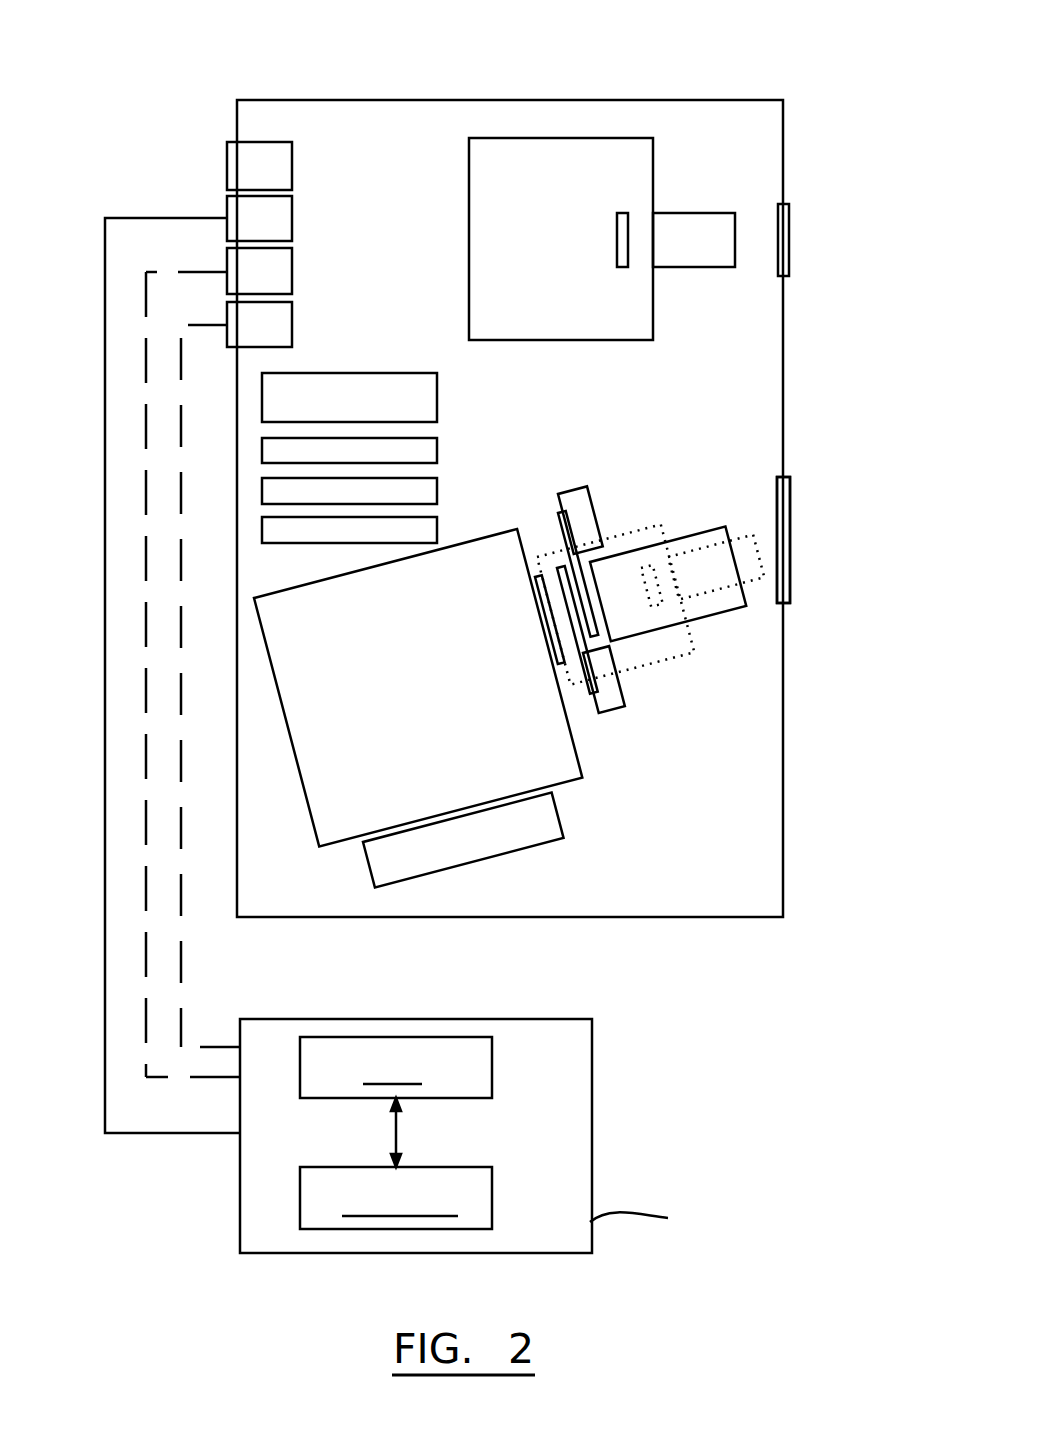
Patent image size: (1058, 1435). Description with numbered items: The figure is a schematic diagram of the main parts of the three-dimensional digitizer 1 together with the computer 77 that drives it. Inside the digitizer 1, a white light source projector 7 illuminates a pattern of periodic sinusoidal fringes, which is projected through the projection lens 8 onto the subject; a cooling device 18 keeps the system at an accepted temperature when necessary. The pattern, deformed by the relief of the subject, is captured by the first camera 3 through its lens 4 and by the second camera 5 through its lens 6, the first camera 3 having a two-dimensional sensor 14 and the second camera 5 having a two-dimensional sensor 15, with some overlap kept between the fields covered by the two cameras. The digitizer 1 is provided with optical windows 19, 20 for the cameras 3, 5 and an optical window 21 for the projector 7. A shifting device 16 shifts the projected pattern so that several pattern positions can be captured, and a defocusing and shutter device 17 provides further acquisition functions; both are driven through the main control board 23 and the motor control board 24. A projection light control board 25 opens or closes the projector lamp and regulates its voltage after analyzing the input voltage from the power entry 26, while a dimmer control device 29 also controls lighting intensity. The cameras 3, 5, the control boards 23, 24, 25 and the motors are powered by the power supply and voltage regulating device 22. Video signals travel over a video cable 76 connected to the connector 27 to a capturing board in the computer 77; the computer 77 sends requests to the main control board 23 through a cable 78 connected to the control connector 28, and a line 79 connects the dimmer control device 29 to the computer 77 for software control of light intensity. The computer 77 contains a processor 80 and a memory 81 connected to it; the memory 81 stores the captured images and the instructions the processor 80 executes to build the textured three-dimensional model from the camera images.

The digitizer 1 is at (380, 100).
The first camera 3 is at (522, 148).
The lens 4 is at (728, 215).
The second camera 5 is at (662, 527).
The lens 6 is at (753, 541).
The white light source projector 7 is at (335, 825).
The projection lens 8 is at (697, 609).
The 2D sensor 14 is at (622, 222).
The 2D sensor 15 is at (662, 609).
The shifting device 16 is at (603, 707).
The defocusing and shutter device 17 is at (583, 497).
The cooling device 18 is at (545, 837).
The optical window 19 is at (792, 208).
The optical window 20 is at (792, 543).
The optical window 21 is at (783, 540).
The power supply and voltage regulating device 22 is at (347, 382).
The main control board 23 is at (432, 447).
The motor control board 24 is at (432, 487).
The projection light control board 25 is at (430, 532).
The power entry 26 is at (228, 148).
The connector 27 is at (228, 205).
The control connector 28 is at (228, 265).
The dimmer control device 29 is at (228, 320).
The video cable 76 is at (118, 218).
The computer 77 is at (578, 1072).
The cable 78 is at (146, 418).
The line 79 is at (181, 705).
The processor 80 is at (455, 1052).
The memory 81 is at (310, 1222).